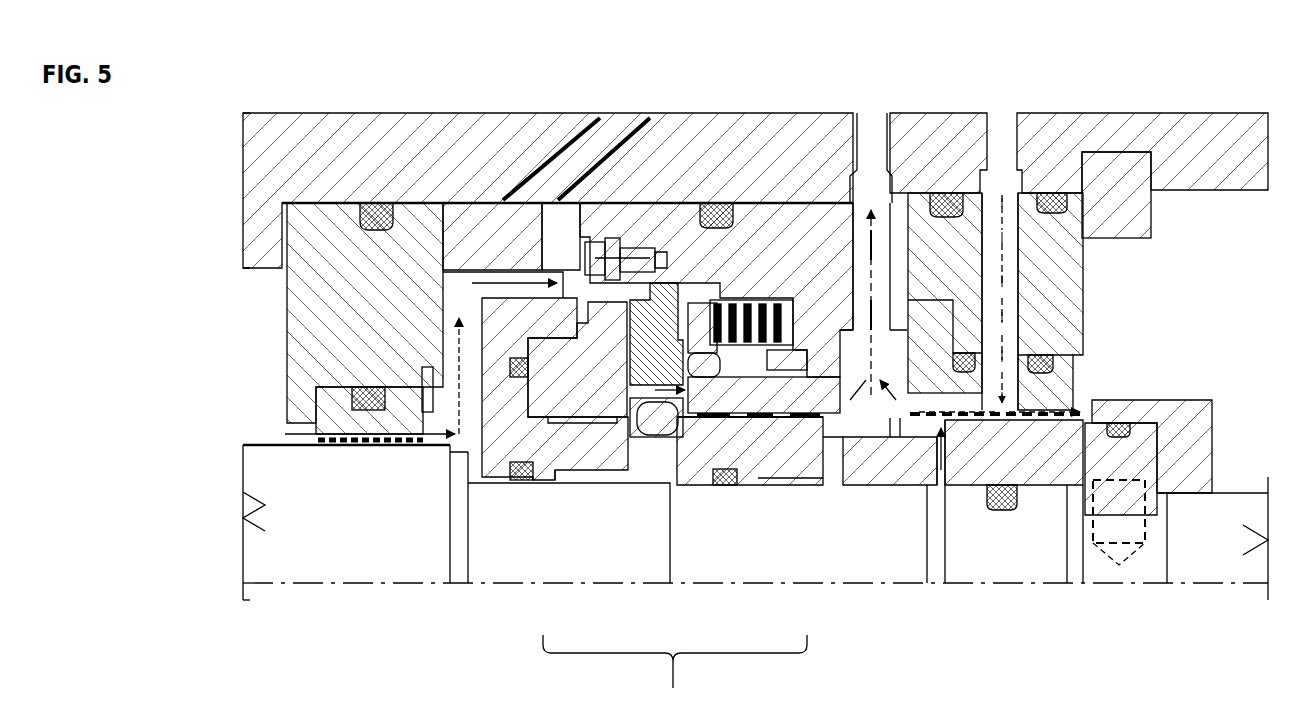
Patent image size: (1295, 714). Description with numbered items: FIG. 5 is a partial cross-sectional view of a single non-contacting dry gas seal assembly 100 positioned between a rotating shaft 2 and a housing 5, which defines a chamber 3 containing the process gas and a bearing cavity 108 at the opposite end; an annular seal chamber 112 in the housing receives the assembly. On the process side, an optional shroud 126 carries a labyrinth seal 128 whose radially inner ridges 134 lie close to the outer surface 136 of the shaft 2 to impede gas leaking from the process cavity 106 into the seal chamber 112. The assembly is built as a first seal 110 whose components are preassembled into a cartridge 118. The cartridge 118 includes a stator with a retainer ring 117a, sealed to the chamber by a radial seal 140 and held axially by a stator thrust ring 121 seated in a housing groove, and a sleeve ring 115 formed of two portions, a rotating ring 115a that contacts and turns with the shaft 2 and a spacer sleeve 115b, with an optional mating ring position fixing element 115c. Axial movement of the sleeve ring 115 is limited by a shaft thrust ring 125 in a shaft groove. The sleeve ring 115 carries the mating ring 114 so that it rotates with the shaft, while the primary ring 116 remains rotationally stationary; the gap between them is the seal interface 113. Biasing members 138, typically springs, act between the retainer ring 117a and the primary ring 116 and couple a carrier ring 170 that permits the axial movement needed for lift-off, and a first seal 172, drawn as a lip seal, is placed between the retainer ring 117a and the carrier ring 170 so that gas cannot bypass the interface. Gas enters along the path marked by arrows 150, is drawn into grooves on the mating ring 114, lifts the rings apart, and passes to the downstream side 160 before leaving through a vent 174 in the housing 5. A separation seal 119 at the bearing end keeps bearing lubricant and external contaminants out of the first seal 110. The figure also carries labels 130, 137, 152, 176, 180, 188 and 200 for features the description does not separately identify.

The rotating shaft 2 is at (265, 553).
The chamber 3 is at (162, 478).
The housing 5 is at (255, 168).
The dry gas seal assembly 100 is at (232, 297).
The process cavity 106 is at (203, 213).
The bearing cavity 108 is at (297, 197).
The first seal 110 is at (675, 672).
The seal chamber 112 is at (474, 282).
The seal interface 113 is at (608, 362).
The mating ring 114 is at (542, 400).
The sleeve ring 115 is at (800, 470).
The rotating ring 115a is at (624, 422).
The spacer sleeve 115b is at (1000, 495).
The mating ring position fixing element 115c is at (655, 438).
The primary ring 116 is at (705, 303).
The retainer ring 117a is at (690, 353).
The cartridge 118 is at (1112, 317).
The separation seal 119 is at (1000, 260).
The stator thrust ring 121 is at (1110, 152).
The shaft thrust ring 125 is at (1150, 512).
The shroud 126 is at (300, 360).
The labyrinth seal 128 is at (300, 396).
The O-ring 130 is at (372, 208).
The ridges 134 is at (393, 447).
The outer surface 136 is at (300, 444).
The gap 137 is at (940, 500).
The biasing members 138 is at (760, 350).
The radial seal 140 is at (750, 300).
The arrows 150 is at (523, 287).
The fastener 152 is at (587, 238).
The downstream side 160 is at (700, 414).
The carrier ring 170 is at (870, 440).
The first seal 172 is at (845, 305).
The vent 174 is at (873, 200).
The bushing 176 is at (942, 250).
The cross passage 180 is at (1002, 270).
The chamber 188 is at (858, 340).
The seal interface 200 is at (786, 492).